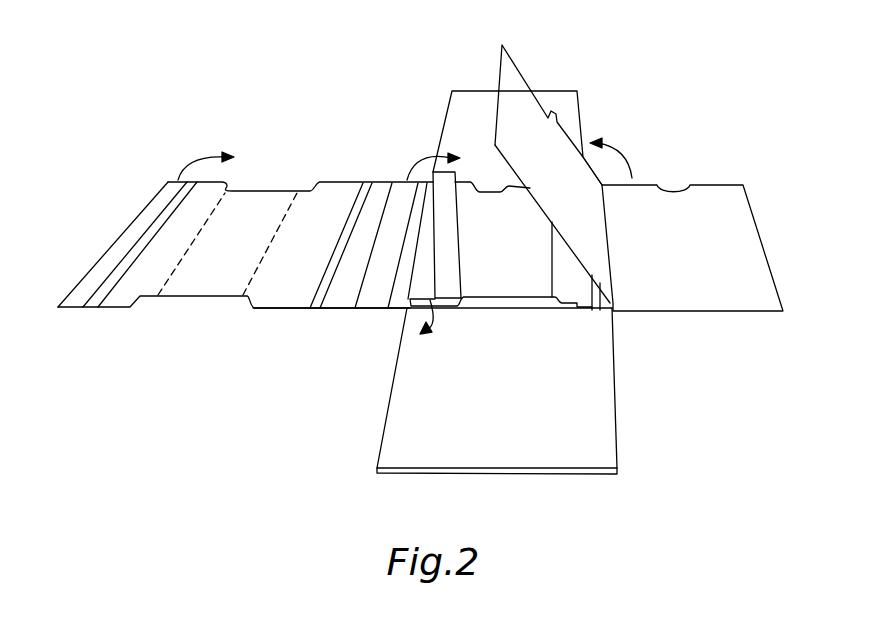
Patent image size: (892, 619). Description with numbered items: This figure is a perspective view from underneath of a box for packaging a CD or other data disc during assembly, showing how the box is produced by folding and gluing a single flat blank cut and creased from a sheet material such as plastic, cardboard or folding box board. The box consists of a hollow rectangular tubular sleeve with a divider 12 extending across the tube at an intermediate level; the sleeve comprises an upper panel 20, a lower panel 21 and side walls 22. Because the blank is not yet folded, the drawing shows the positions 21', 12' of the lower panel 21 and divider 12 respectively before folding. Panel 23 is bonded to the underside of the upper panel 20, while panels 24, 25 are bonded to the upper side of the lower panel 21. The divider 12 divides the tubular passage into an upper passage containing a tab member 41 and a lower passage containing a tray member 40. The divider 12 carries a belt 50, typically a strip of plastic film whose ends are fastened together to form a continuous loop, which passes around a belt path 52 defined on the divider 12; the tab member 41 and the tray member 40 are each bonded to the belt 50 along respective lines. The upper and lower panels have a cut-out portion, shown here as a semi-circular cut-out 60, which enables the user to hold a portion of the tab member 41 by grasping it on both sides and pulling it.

The divider 12 is at (370, 287).
The position of divider before folding 12' is at (190, 276).
The upper panel 20 is at (472, 312).
The lower panel 21 is at (564, 174).
The position of lower panel before folding 21' is at (706, 248).
The side walls 22 is at (410, 302).
The panel 23 is at (73, 307).
The panel 24 is at (335, 310).
The panel 25 is at (372, 310).
The tray member 40 is at (615, 442).
The tab member 41 is at (447, 113).
The belt 50 is at (467, 248).
The belt path 52 is at (227, 196).
The semi-circular cut-out 60 is at (552, 115).